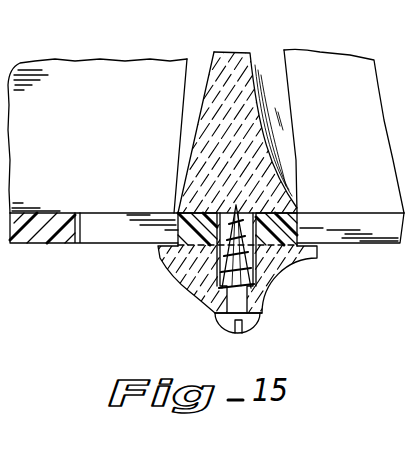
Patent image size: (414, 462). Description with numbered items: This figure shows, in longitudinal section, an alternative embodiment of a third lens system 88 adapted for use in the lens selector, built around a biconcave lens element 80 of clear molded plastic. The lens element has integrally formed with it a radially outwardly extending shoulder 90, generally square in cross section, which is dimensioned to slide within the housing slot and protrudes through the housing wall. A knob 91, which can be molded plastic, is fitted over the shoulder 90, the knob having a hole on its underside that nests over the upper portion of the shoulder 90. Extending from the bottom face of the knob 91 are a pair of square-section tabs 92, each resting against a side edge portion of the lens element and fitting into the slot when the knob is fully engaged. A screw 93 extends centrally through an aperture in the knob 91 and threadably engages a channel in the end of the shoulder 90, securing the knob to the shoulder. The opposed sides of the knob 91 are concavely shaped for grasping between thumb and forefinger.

The biconcave lens element 80 is at (265, 145).
The third lens system 88 is at (193, 66).
The shoulder 90 is at (194, 271).
The knob 91 is at (286, 273).
The tabs 92 is at (177, 225).
The screw 93 is at (221, 324).